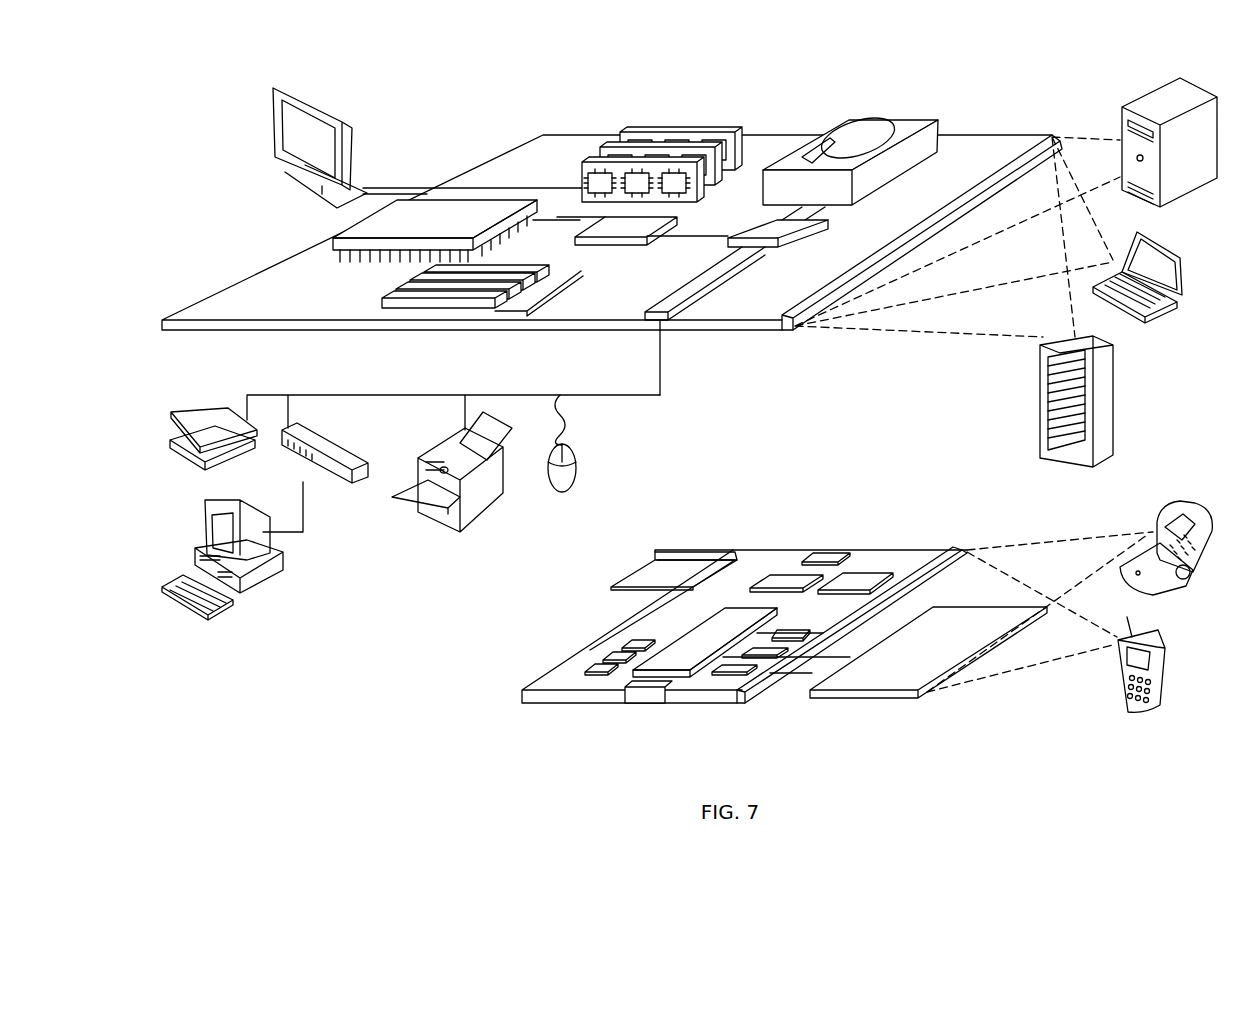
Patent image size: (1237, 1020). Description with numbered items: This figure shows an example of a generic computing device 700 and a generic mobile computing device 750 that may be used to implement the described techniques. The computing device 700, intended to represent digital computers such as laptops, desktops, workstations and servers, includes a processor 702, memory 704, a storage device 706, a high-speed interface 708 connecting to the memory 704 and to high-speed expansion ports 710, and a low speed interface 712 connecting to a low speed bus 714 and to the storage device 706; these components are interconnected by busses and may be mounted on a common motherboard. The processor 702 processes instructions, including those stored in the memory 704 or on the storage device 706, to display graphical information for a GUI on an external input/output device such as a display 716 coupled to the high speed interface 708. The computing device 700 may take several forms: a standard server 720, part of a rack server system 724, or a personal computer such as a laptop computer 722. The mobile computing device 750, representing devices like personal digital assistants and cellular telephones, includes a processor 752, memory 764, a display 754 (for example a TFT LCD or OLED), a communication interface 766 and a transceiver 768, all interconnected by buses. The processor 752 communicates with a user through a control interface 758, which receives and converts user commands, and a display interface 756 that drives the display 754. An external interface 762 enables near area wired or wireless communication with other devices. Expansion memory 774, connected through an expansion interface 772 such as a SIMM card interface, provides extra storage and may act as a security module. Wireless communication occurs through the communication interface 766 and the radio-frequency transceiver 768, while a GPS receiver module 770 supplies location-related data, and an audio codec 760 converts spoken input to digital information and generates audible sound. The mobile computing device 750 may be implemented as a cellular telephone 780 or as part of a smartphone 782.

The computing device 700 is at (449, 106).
The processor 702 is at (343, 241).
The memory 704 is at (640, 145).
The storage device 706 is at (840, 118).
The high-speed interface 708 is at (605, 228).
The high-speed expansion ports 710 is at (405, 295).
The low speed interface 712 is at (765, 230).
The low speed bus 714 is at (672, 320).
The display 716 is at (277, 88).
The standard server 720 is at (1127, 122).
The laptop computer 722 is at (1182, 250).
The rack server system 724 is at (1042, 425).
The mobile computing device 750 is at (496, 710).
The processor 752 is at (680, 664).
The display 754 is at (893, 680).
The display interface 756 is at (750, 675).
The control interface 758 is at (772, 653).
The audio codec 760 is at (792, 636).
The external interface 762 is at (648, 690).
The memory 764 is at (604, 654).
The communication interface 766 is at (787, 582).
The transceiver 768 is at (857, 578).
The GPS receiver module 770 is at (830, 556).
The expansion interface 772 is at (712, 562).
The expansion memory 774 is at (651, 562).
The cellular telephone 780 is at (1167, 504).
The smartphone 782 is at (1117, 672).